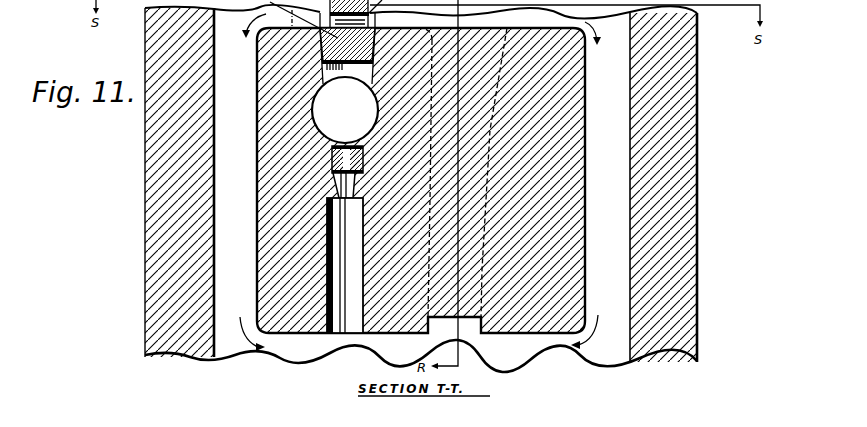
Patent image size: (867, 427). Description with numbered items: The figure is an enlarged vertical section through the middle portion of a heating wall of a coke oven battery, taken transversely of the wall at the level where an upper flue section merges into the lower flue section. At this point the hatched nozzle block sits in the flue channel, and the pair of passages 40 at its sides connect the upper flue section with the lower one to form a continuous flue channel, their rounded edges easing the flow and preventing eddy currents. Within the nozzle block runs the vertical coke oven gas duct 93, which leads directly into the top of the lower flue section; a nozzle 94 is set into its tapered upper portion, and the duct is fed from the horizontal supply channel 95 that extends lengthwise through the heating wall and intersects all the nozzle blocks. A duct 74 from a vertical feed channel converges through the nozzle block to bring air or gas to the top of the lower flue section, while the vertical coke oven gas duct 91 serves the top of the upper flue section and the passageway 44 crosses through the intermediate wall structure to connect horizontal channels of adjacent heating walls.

The passage 40 is at (227, 195).
The passageway 44 is at (562, 183).
The duct 74 is at (487, 75).
The vertical coke oven gas duct 91 is at (305, 57).
The vertical coke oven gas duct 93 is at (345, 307).
The nozzle 94 is at (354, 150).
The horizontal supply channel 95 is at (313, 115).